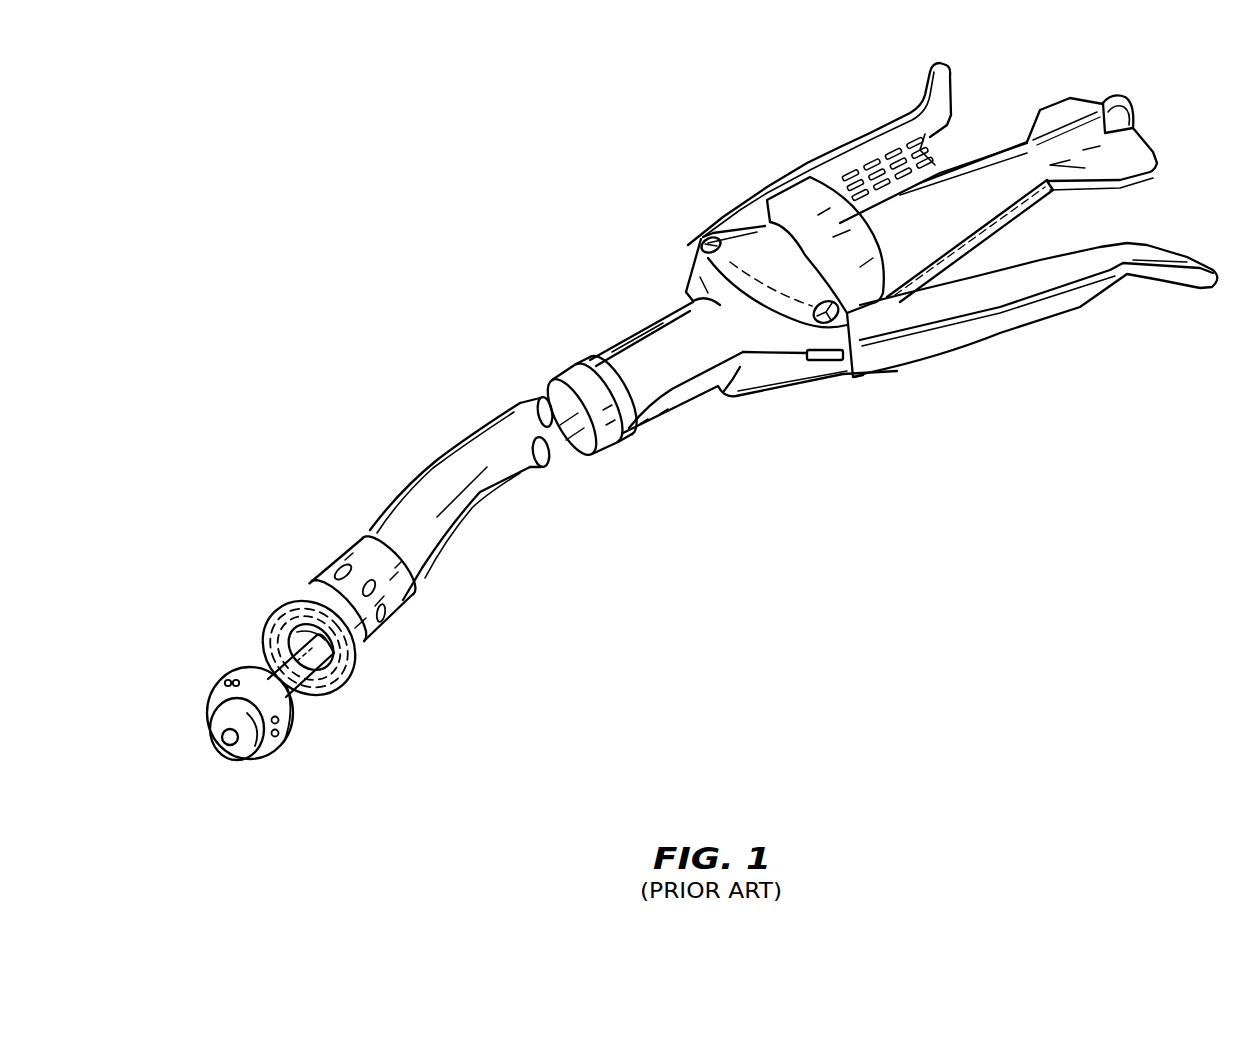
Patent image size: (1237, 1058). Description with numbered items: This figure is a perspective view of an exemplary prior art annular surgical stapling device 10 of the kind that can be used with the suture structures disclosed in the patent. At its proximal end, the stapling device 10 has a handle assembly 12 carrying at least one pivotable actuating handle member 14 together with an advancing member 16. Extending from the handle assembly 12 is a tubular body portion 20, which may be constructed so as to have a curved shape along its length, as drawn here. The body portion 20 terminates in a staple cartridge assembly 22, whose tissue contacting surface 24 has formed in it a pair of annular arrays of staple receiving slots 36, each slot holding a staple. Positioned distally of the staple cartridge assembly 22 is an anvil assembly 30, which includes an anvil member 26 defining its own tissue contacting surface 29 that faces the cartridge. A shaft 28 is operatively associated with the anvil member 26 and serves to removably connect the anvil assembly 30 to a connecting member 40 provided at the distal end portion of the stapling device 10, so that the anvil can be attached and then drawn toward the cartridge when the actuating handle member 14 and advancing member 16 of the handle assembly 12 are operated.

The annular surgical stapling device 10 is at (546, 326).
The handle assembly 12 is at (709, 213).
The pivotable actuating handle member 14 is at (868, 147).
The advancing member 16 is at (975, 126).
The tubular body portion 20 is at (481, 465).
The staple cartridge assembly 22 is at (315, 561).
The tissue contacting surface 24 is at (274, 614).
The anvil member 26 is at (231, 668).
The shaft 28 is at (288, 681).
The tissue contacting surface 29 is at (251, 665).
The anvil assembly 30 is at (296, 745).
The staple receiving slots 36 is at (343, 655).
The connecting member 40 is at (338, 678).